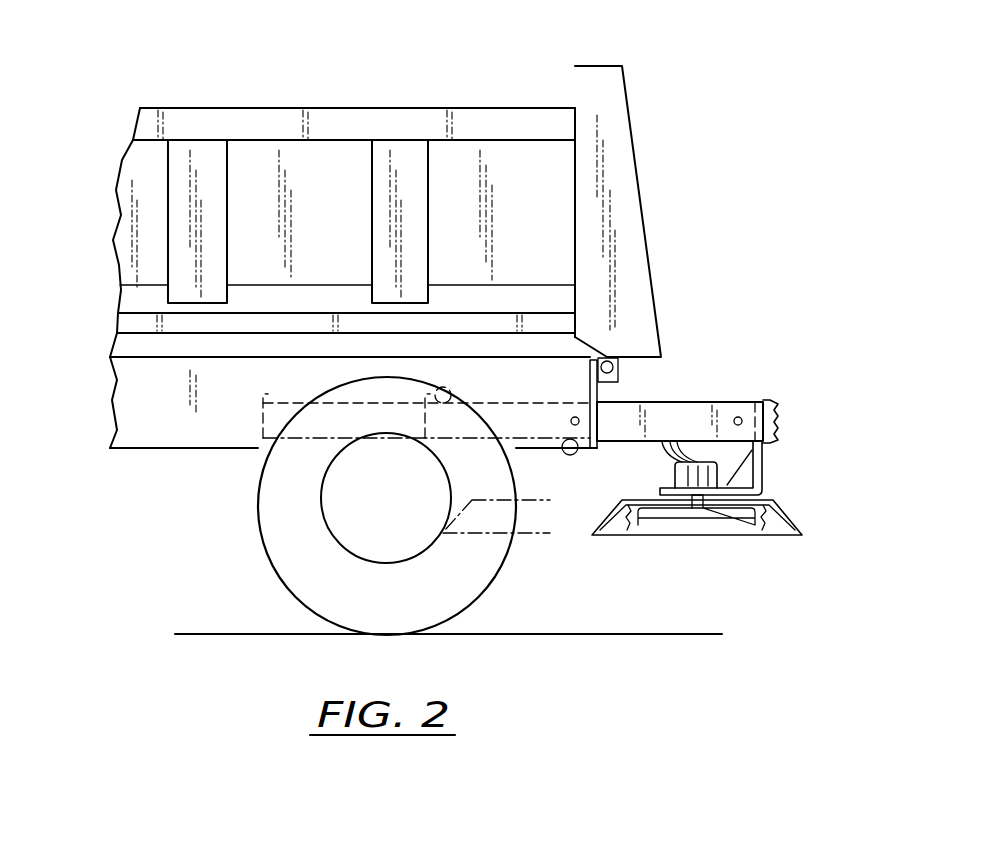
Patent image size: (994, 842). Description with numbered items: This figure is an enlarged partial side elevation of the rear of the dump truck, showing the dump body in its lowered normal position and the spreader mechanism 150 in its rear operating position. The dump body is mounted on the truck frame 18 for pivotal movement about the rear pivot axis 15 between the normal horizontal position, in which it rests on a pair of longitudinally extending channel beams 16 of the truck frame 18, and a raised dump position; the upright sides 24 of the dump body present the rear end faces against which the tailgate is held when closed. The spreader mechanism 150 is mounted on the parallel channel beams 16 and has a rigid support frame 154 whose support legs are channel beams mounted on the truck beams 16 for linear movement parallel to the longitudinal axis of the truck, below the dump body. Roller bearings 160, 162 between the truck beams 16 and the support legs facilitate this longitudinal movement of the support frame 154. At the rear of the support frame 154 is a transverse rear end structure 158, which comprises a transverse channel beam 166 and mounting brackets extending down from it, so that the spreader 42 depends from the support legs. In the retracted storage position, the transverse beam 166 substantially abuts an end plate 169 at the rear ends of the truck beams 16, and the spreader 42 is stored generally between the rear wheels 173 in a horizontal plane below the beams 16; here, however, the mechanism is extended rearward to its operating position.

The truck frame 18 is at (140, 395).
The upright sides of the dump body 24 is at (620, 103).
The longitudinally extending beams 16 is at (163, 438).
The rear pivot axis 15 is at (616, 372).
The end plate 169 is at (590, 390).
The roller bearing 160 is at (436, 394).
The roller bearing 162 is at (570, 456).
The rear wheels 173 is at (277, 568).
The spreader mechanism 150 is at (746, 425).
The support frame 154 is at (712, 395).
The transverse channel beam 166 is at (776, 405).
The rear end structure 158 is at (782, 447).
The spreader 42 is at (803, 516).